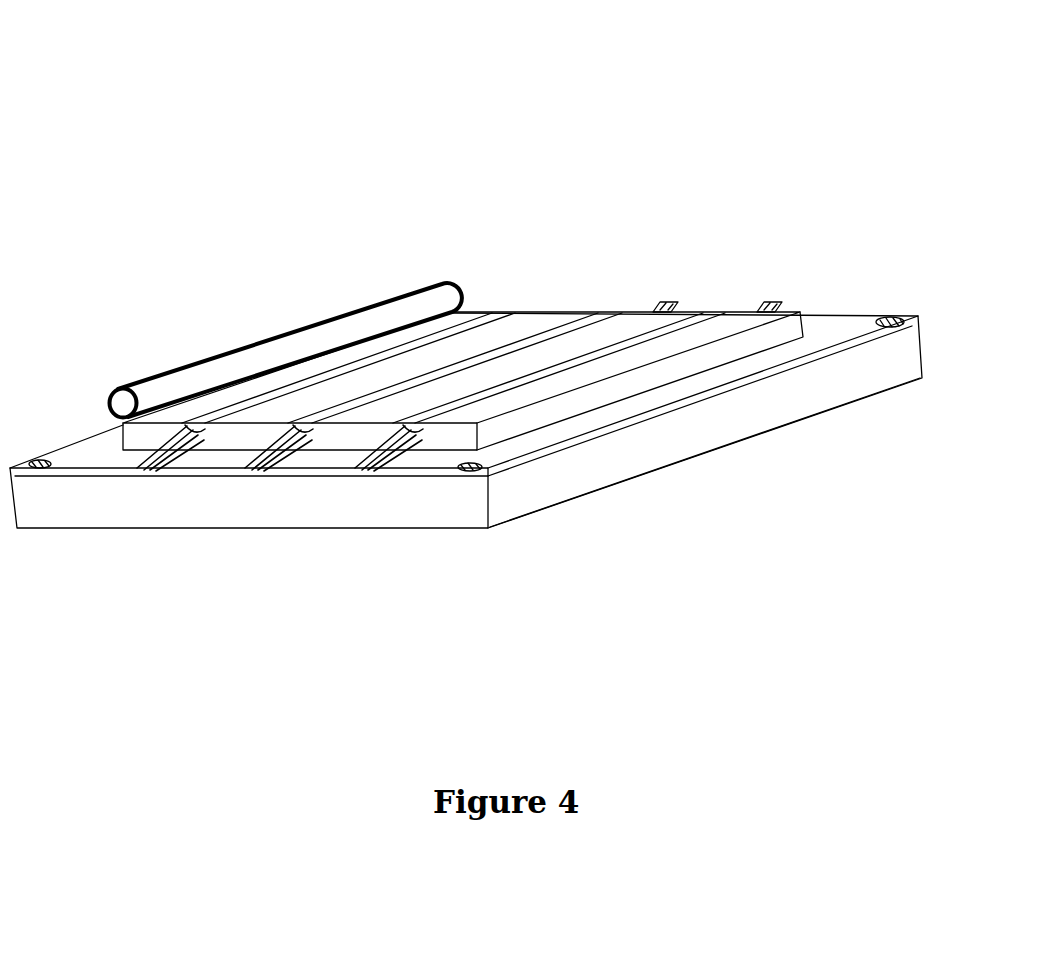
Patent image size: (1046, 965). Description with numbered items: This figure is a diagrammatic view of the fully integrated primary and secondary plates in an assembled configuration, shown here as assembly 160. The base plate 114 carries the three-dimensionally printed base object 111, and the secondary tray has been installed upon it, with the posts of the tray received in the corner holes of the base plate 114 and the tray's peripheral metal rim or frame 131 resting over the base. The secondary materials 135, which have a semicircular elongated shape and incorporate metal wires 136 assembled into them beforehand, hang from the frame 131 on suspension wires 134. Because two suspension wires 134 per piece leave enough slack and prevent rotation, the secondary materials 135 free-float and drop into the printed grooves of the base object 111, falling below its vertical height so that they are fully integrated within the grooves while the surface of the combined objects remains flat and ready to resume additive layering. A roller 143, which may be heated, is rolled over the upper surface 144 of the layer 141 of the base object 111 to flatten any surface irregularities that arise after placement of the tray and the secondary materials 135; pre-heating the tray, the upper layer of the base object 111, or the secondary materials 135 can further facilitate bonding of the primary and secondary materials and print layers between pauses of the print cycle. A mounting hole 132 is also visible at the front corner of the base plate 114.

The sample holder assembly 160 is at (247, 112).
The base plate 114 is at (192, 505).
The base object 111 is at (504, 372).
The roller 143 is at (427, 307).
The mounting hole 132 is at (33, 461).
The peripheral metal rim or frame 131 is at (677, 407).
The suspension wires/filaments 134 is at (268, 455).
The secondary materials 135 is at (728, 312).
The metal wires 136 is at (558, 312).
The upper surface 144 is at (722, 330).
The layer 141 is at (750, 348).